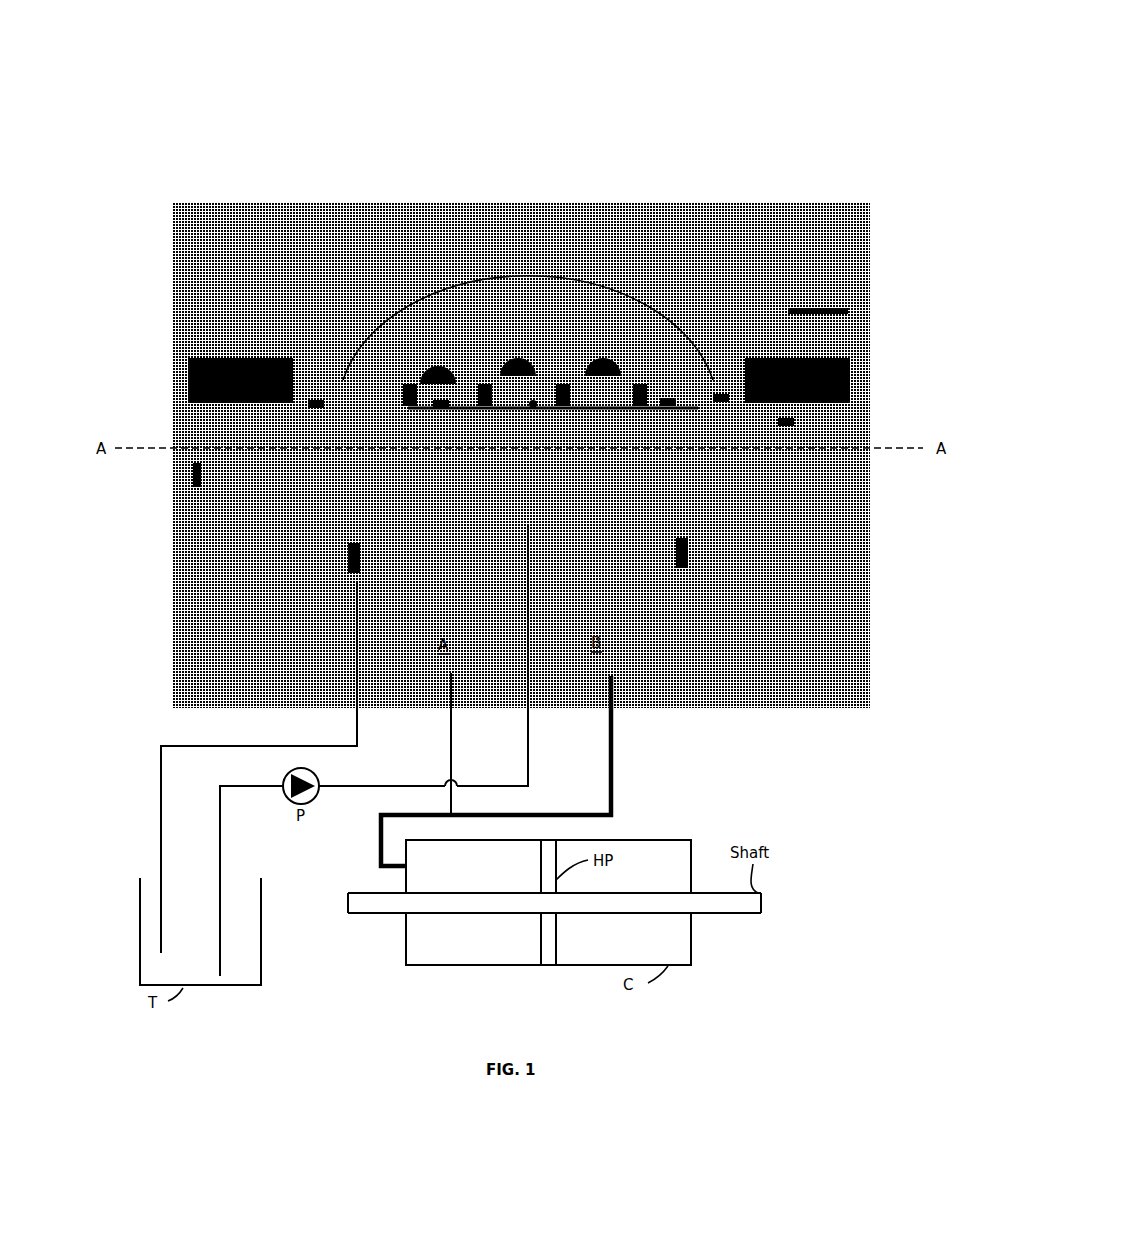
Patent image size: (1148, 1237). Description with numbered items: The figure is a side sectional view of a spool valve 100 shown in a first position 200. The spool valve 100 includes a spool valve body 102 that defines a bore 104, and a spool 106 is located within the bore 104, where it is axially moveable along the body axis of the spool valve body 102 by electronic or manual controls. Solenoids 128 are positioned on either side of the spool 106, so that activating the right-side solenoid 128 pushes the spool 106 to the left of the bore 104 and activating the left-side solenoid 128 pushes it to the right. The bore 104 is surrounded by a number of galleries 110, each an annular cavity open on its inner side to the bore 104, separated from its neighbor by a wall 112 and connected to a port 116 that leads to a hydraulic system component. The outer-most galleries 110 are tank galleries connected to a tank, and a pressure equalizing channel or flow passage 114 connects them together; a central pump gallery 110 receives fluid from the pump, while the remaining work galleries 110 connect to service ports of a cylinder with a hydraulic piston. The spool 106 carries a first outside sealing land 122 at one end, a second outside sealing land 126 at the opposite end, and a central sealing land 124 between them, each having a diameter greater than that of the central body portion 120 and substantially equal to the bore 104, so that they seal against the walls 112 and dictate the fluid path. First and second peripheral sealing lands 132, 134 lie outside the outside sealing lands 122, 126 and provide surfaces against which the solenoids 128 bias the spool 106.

The spool valve 100 is at (128, 85).
The spool valve body 102 is at (790, 238).
The bore 104 is at (767, 368).
The spool 106 is at (778, 415).
The galleries 110 is at (432, 378).
The wall 112 is at (393, 380).
The pressure equalizing channel or flow passage 114 is at (548, 289).
The port 116 is at (349, 573).
The central body portion 120 is at (537, 431).
The first outside sealing land 122 is at (433, 397).
The central sealing land 124 is at (525, 395).
The second outside sealing land 126 is at (660, 397).
The solenoids 128 is at (192, 418).
The first peripheral sealing land 132 is at (313, 393).
The second peripheral sealing land 134 is at (712, 392).
The first position 200 is at (195, 467).